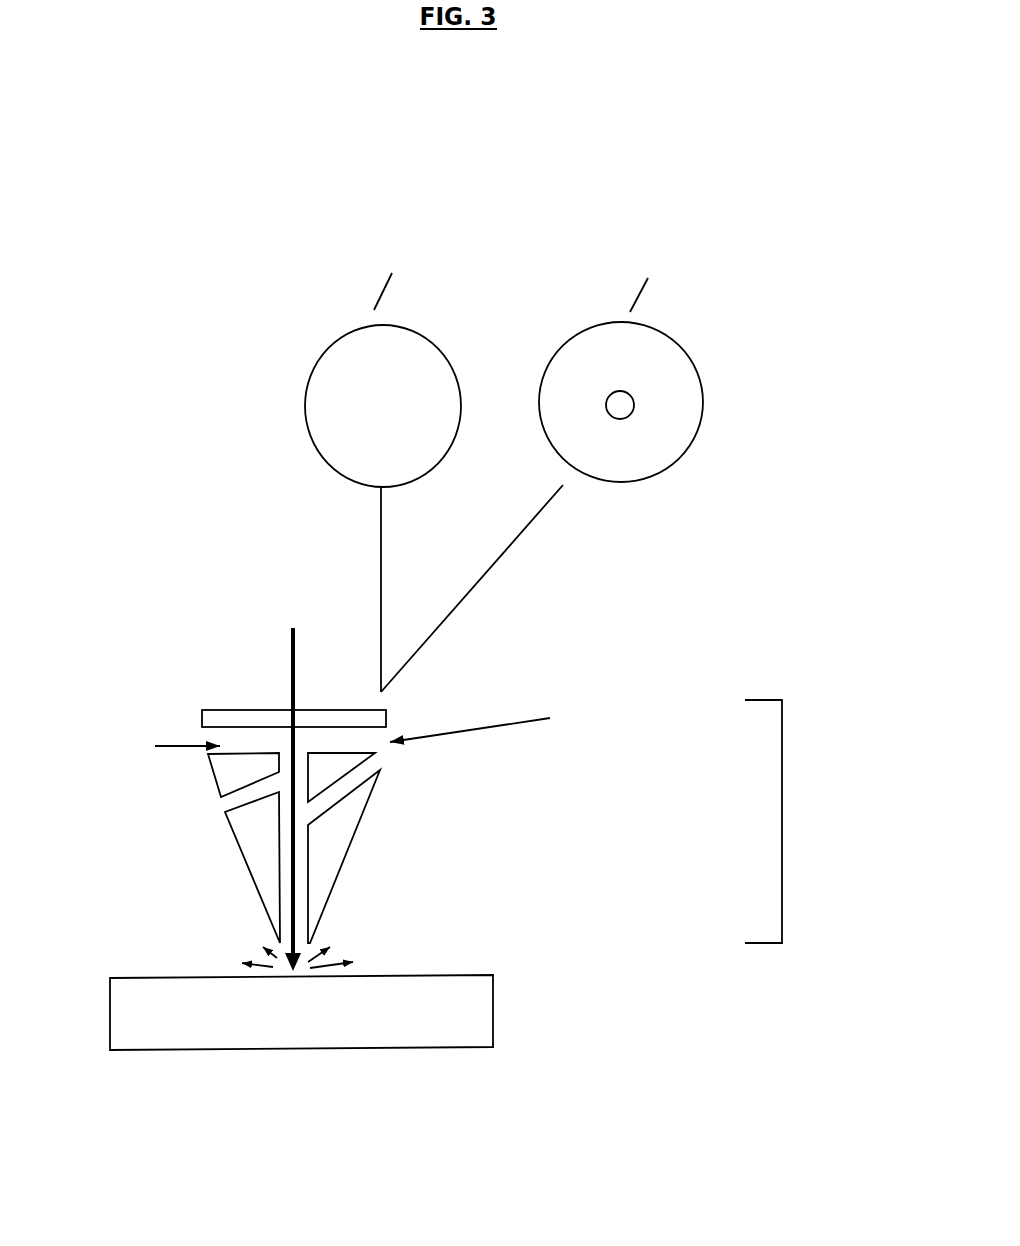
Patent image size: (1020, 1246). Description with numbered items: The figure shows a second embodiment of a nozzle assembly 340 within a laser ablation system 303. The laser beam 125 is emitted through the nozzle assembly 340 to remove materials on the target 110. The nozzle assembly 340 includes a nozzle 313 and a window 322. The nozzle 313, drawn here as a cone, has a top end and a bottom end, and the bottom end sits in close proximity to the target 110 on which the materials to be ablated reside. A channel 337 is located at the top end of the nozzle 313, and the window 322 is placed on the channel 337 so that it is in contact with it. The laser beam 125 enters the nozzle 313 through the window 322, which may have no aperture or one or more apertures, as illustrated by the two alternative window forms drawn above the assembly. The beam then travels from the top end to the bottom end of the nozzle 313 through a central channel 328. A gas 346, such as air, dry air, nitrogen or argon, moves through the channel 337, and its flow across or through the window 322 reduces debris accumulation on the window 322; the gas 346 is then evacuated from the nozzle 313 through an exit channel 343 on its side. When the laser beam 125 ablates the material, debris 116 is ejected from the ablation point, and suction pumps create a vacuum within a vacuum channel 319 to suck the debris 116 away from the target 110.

The laser ablation system 303 is at (453, 1185).
The laser beam 125 is at (315, 608).
The window 322 is at (247, 702).
The channel 337 is at (205, 737).
The gas 346 is at (595, 741).
The exit channel 343 is at (222, 808).
The vacuum channel 319 is at (382, 761).
The central channel 328 is at (303, 853).
The debris 116 is at (350, 942).
The nozzle 313 is at (402, 802).
The nozzle assembly 340 is at (822, 848).
The target 110 is at (320, 1035).